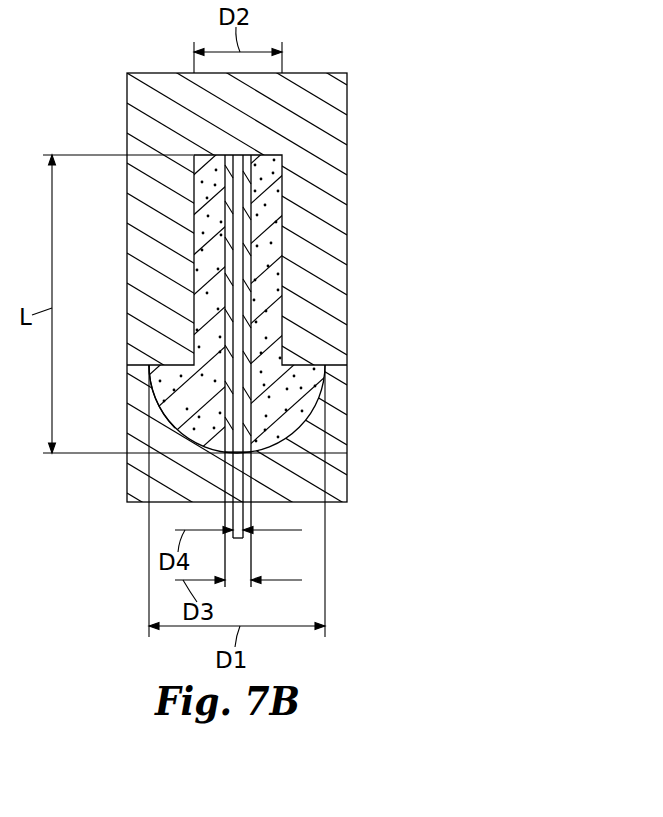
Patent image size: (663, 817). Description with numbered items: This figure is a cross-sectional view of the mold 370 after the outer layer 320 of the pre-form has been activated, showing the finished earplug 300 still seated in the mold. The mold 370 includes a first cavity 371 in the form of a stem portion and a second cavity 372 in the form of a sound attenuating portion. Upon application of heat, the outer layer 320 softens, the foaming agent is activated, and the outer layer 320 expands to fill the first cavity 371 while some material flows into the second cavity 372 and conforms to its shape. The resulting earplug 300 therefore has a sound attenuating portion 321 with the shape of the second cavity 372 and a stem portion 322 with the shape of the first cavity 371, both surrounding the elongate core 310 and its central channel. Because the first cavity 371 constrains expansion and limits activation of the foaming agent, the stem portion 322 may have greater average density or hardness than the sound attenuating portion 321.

The mold 370 is at (340, 53).
The first cavity 371 is at (290, 256).
The second cavity 372 is at (316, 402).
The stem portion 322 is at (195, 256).
The elongate core 310 is at (230, 277).
The outer layer 320 is at (302, 433).
The earplug 300 is at (283, 443).
The sound attenuating portion 321 is at (147, 381).